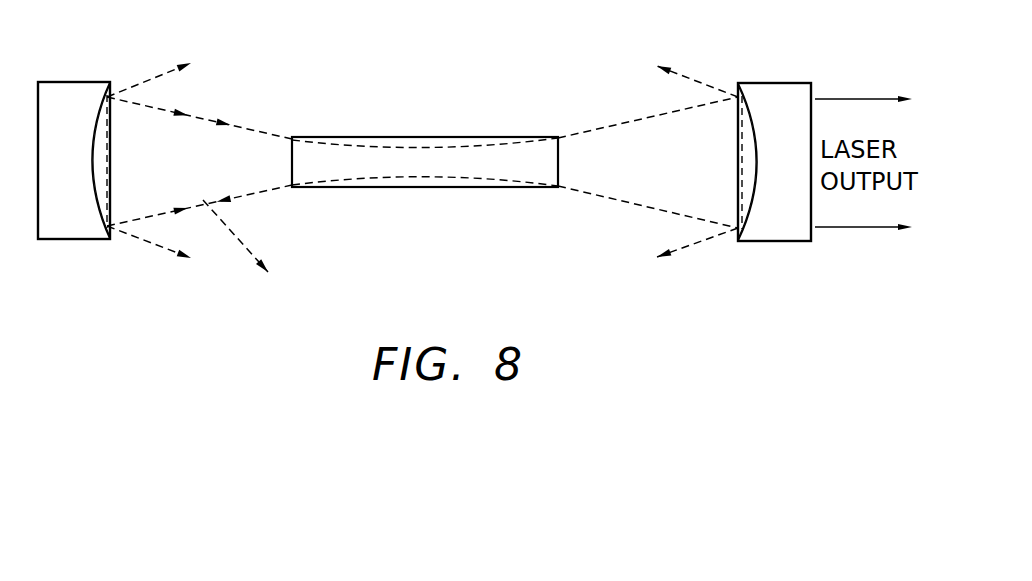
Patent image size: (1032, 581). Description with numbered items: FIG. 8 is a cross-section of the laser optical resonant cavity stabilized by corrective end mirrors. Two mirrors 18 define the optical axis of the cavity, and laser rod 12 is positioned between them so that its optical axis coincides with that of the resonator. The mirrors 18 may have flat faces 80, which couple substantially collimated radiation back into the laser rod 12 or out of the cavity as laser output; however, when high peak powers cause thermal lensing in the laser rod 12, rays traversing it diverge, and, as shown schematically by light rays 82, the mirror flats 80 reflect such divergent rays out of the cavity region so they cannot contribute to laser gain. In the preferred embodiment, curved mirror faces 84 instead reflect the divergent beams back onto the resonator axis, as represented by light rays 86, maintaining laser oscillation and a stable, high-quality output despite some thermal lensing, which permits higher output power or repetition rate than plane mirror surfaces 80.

The laser rod 12 is at (412, 137).
The mirrors 18 is at (87, 80).
The flat mirror faces 80 is at (107, 192).
The light rays for flat faces 82 is at (153, 75).
The curved mirror faces 84 is at (755, 165).
The light rays for curved faces 86 is at (242, 228).